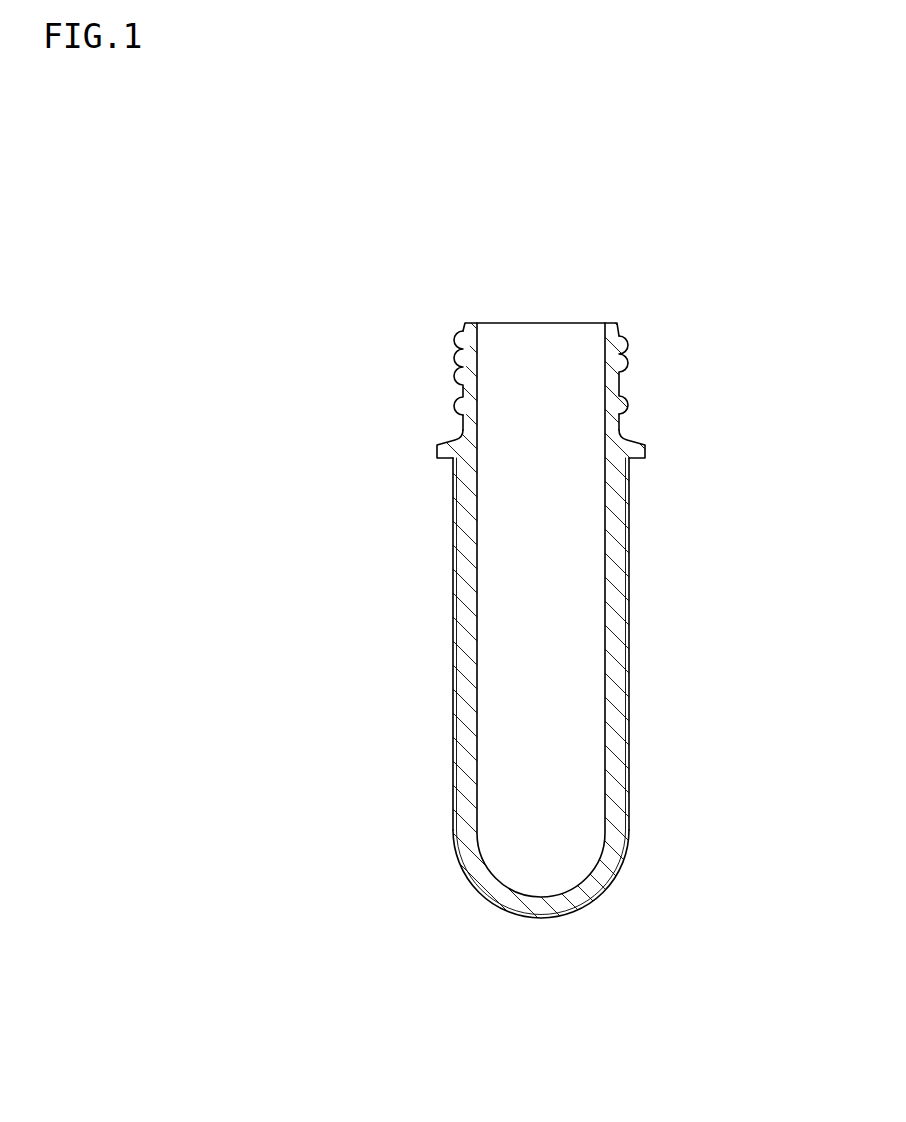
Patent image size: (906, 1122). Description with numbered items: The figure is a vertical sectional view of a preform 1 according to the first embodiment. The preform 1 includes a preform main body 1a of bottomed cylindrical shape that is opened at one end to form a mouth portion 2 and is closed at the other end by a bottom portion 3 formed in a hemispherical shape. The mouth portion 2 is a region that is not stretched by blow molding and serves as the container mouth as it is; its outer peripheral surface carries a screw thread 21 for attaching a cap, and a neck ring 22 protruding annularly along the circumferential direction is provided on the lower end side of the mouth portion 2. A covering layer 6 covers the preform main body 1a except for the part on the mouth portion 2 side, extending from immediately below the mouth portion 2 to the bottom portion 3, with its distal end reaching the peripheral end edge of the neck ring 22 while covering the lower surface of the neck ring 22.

The preform 1 is at (683, 252).
The preform main body 1a is at (619, 424).
The mouth portion 2 is at (463, 390).
The screw thread 21 is at (627, 343).
The neck ring 22 is at (636, 451).
The covering layer 6 is at (630, 656).
The bottom portion 3 is at (541, 903).